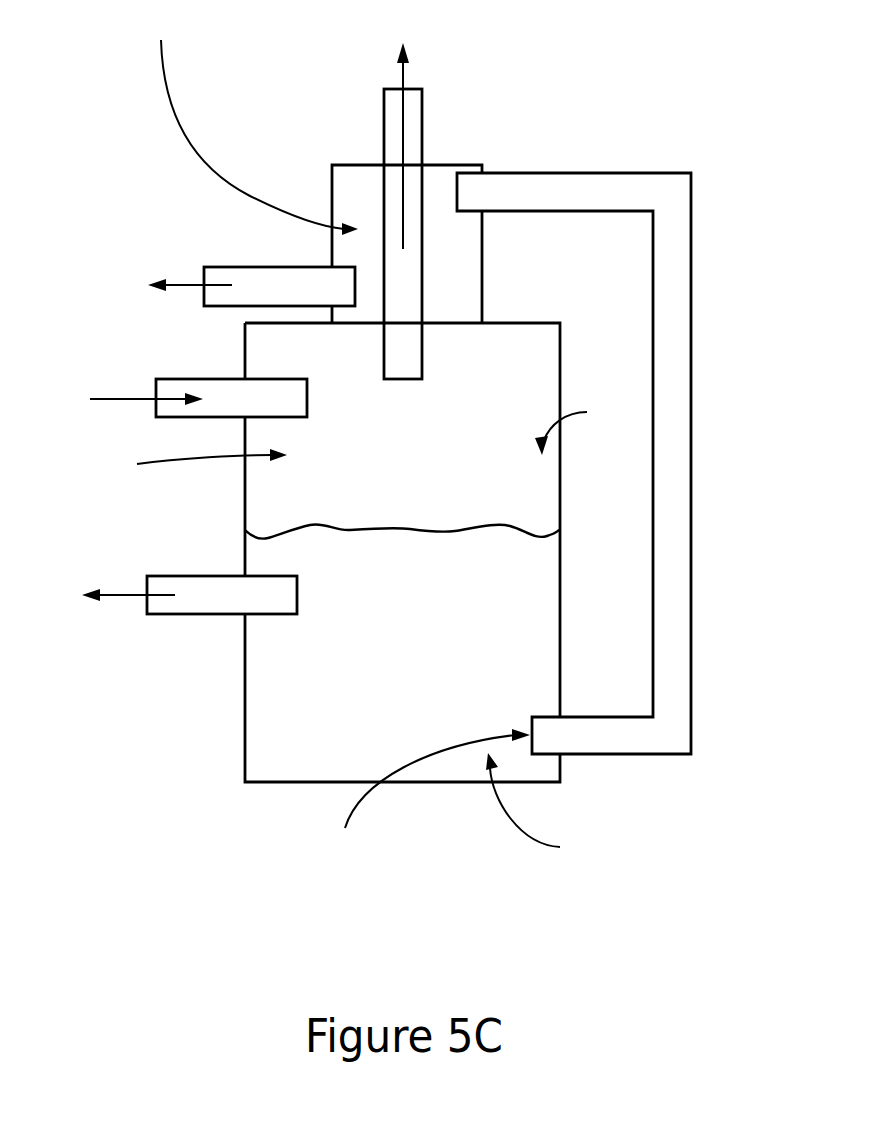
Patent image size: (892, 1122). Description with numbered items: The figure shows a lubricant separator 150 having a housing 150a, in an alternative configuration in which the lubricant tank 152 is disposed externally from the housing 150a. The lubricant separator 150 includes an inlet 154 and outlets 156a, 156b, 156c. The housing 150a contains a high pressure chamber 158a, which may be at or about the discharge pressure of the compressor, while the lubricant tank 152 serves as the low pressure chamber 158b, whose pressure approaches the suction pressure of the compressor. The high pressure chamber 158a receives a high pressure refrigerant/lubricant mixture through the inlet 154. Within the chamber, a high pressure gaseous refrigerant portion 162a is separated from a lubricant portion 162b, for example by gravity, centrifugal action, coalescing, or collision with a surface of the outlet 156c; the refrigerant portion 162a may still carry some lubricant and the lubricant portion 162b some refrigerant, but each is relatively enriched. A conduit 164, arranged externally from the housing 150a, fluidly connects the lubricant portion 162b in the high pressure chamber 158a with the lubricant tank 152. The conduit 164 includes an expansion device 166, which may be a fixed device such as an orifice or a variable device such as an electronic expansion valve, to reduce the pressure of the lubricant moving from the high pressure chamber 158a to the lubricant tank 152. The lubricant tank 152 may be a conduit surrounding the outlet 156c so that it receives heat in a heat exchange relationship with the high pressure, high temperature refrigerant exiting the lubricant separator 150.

The lubricant separator 150 is at (676, 115).
The housing 150a is at (245, 679).
The lubricant tank 152 is at (332, 192).
The inlet 154 is at (195, 379).
The outlet 156a is at (185, 576).
The outlet 156b is at (250, 267).
The outlet 156c is at (422, 113).
The high pressure chamber 158a is at (584, 429).
The low pressure chamber 158b is at (245, 123).
The gaseous refrigerant portion 162a is at (187, 462).
The lubricant portion 162b is at (546, 806).
The conduit 164 is at (692, 295).
The expansion device 166 is at (425, 794).